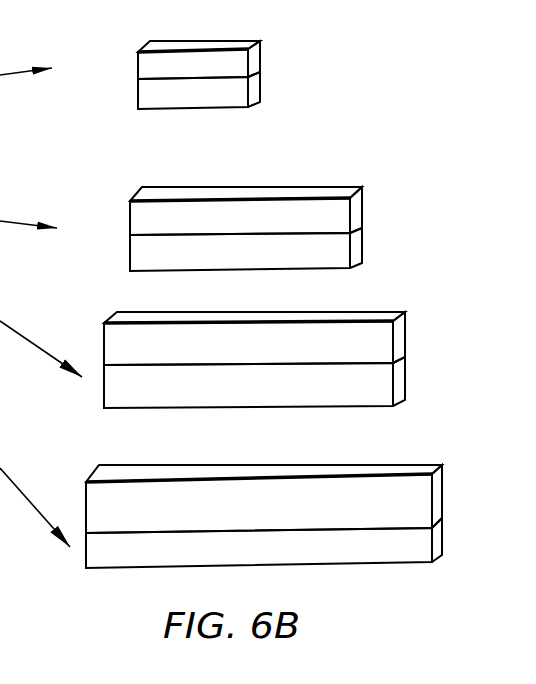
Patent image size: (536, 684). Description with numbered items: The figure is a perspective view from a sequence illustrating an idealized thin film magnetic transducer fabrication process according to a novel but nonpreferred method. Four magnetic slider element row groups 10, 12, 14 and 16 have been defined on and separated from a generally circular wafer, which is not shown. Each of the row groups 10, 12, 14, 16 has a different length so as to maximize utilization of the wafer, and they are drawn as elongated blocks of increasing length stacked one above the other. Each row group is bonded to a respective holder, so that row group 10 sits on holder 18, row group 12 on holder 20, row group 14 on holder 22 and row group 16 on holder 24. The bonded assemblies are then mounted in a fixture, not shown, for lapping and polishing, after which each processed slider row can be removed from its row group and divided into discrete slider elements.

The magnetic slider element row group 10 is at (138, 95).
The magnetic slider element row group 12 is at (130, 254).
The magnetic slider element row group 14 is at (104, 388).
The magnetic slider element row group 16 is at (92, 553).
The holder 18 is at (138, 65).
The holder 20 is at (130, 218).
The holder 22 is at (112, 345).
The holder 24 is at (92, 500).